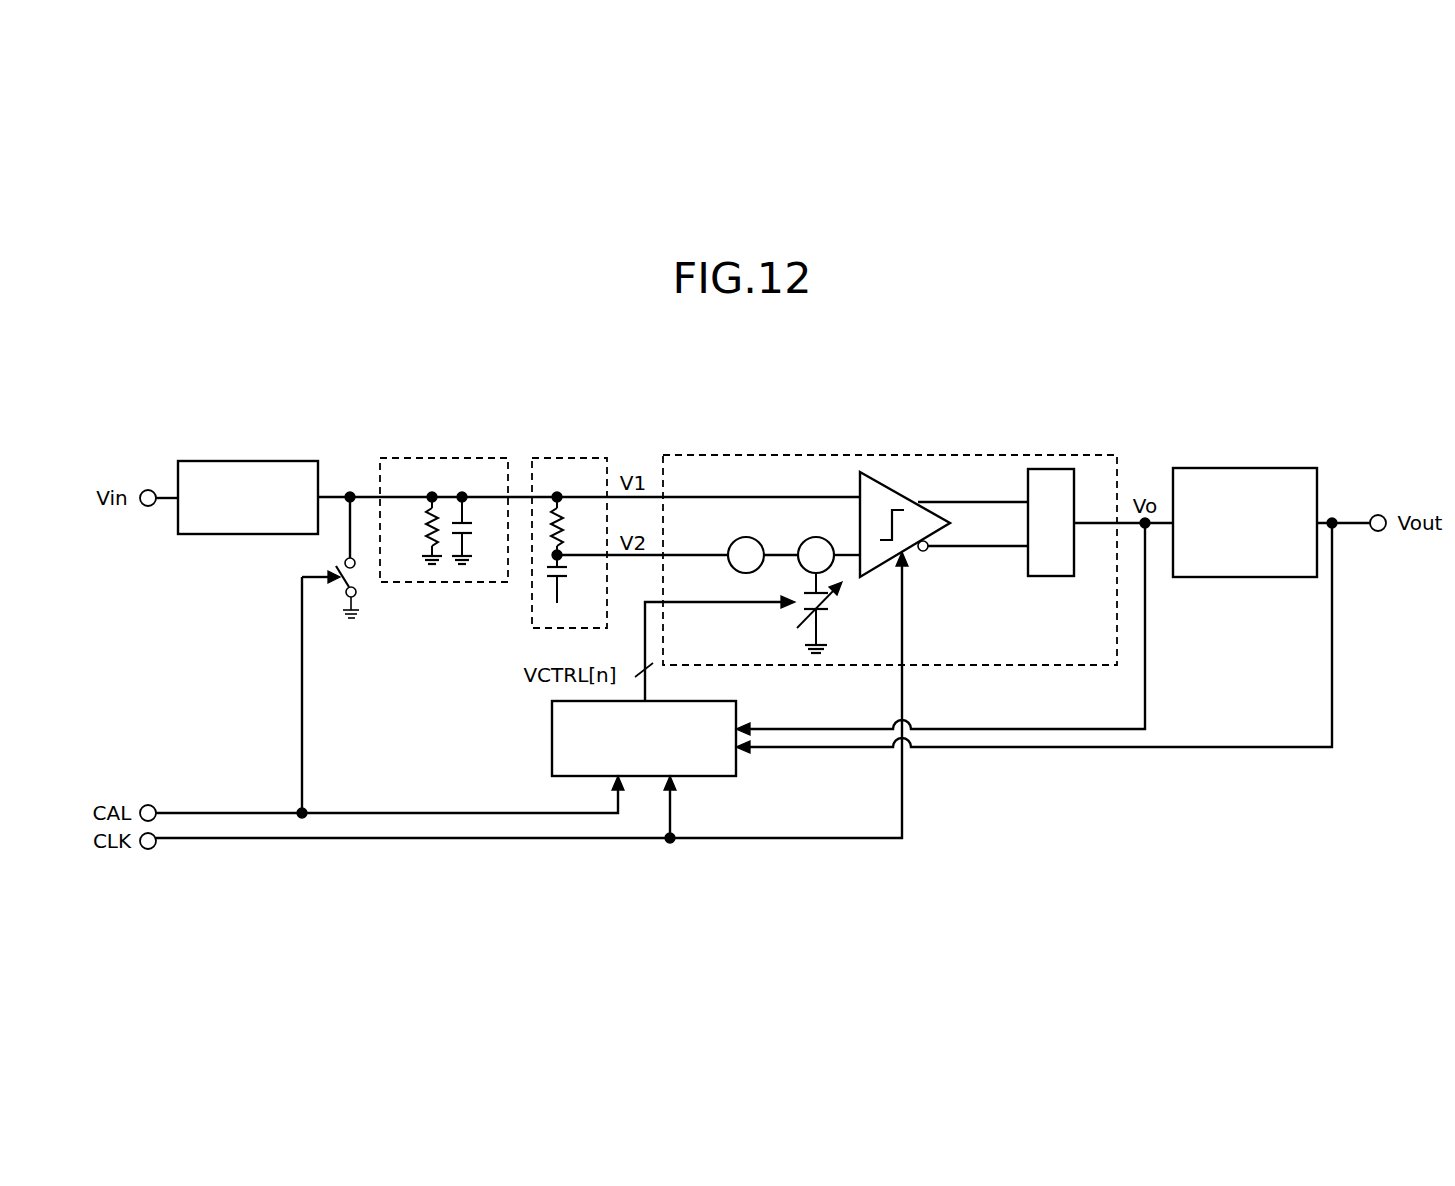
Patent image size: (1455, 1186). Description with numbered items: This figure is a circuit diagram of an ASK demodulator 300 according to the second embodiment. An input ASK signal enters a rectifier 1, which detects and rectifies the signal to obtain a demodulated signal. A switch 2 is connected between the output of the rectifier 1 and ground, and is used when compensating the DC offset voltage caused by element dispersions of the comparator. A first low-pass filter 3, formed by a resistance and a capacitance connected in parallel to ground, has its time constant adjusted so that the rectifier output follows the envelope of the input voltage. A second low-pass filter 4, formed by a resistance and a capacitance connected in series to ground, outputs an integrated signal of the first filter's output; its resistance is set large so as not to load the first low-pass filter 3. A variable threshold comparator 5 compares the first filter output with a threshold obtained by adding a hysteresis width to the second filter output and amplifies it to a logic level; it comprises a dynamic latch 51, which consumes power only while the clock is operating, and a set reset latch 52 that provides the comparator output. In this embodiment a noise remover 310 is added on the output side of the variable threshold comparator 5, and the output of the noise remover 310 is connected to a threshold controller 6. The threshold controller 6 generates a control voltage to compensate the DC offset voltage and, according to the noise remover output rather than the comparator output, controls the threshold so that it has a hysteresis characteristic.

The rectifier 1 is at (205, 460).
The switch 2 is at (346, 598).
The first low-pass filter 3 is at (418, 582).
The second low-pass filter 4 is at (531, 616).
The variable threshold comparator 5 is at (1088, 455).
The dynamic latch 51 is at (926, 552).
The set reset (RS) latch 52 is at (1052, 578).
The threshold controller 6 is at (738, 766).
The ASK demodulator 300 is at (1217, 392).
The noise remover 310 is at (1197, 467).